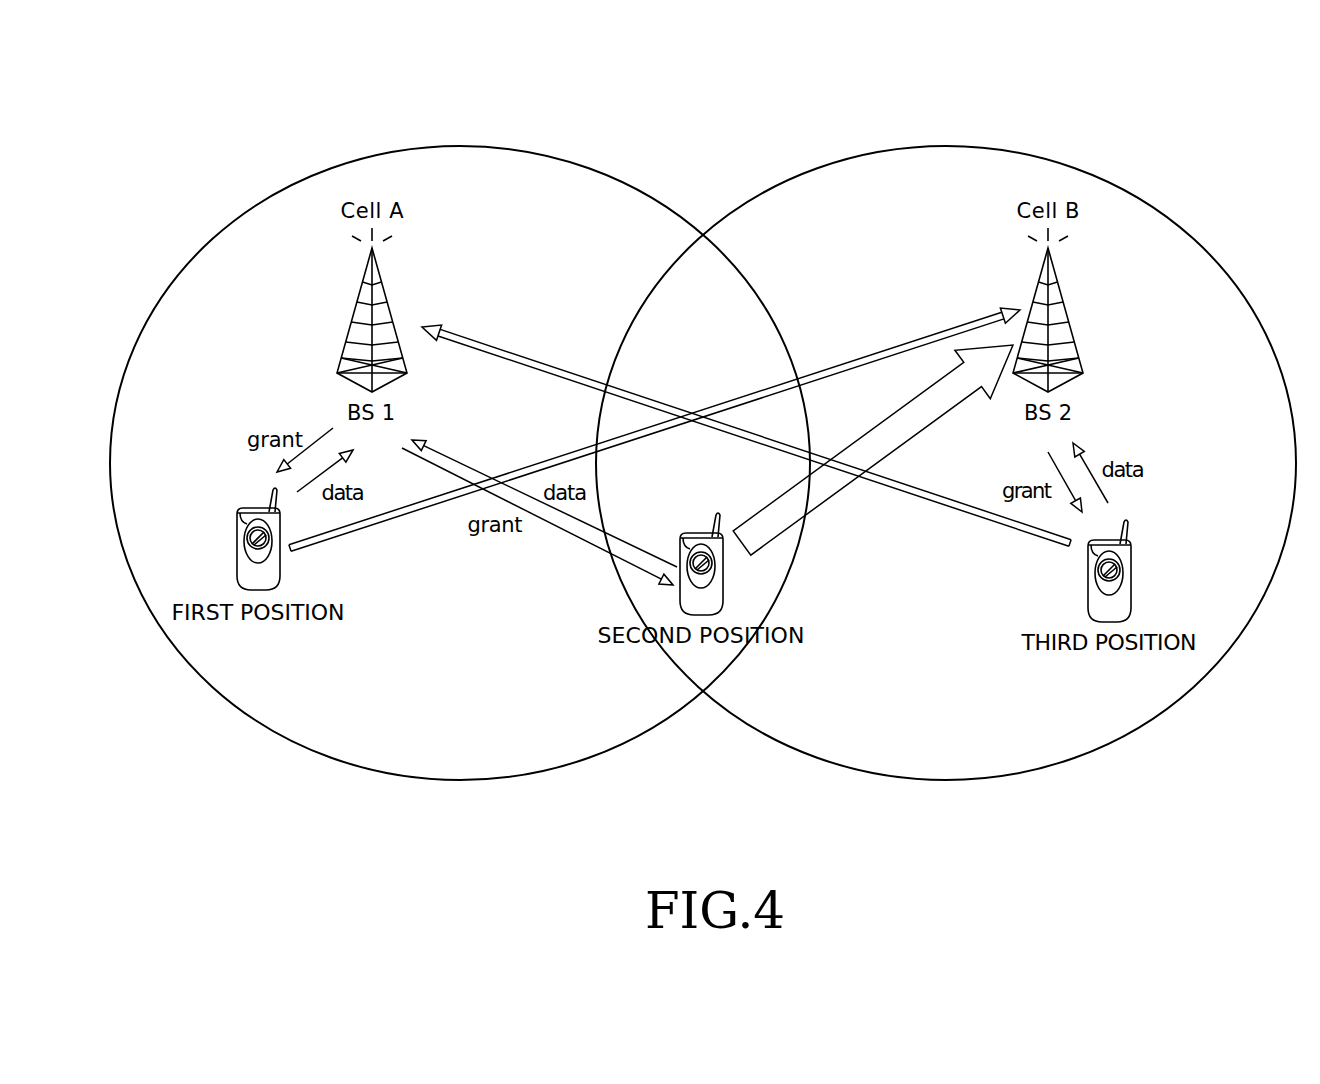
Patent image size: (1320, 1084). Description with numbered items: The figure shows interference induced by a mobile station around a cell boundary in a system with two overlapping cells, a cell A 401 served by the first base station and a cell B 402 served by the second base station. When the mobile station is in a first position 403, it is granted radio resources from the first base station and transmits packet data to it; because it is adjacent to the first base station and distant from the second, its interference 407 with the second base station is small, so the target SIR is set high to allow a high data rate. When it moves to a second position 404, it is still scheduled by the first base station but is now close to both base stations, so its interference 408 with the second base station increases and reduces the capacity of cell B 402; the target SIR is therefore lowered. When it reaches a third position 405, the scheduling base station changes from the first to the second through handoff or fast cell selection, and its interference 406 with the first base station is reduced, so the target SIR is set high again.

The cell A 401 is at (455, 147).
The cell B 402 is at (946, 147).
The first position 403 is at (237, 545).
The second position 404 is at (702, 533).
The third position 405 is at (1132, 573).
The interference with BS 1 406 is at (471, 335).
The interference with BS 2 407 is at (950, 325).
The interference with BS 2 408 is at (933, 423).